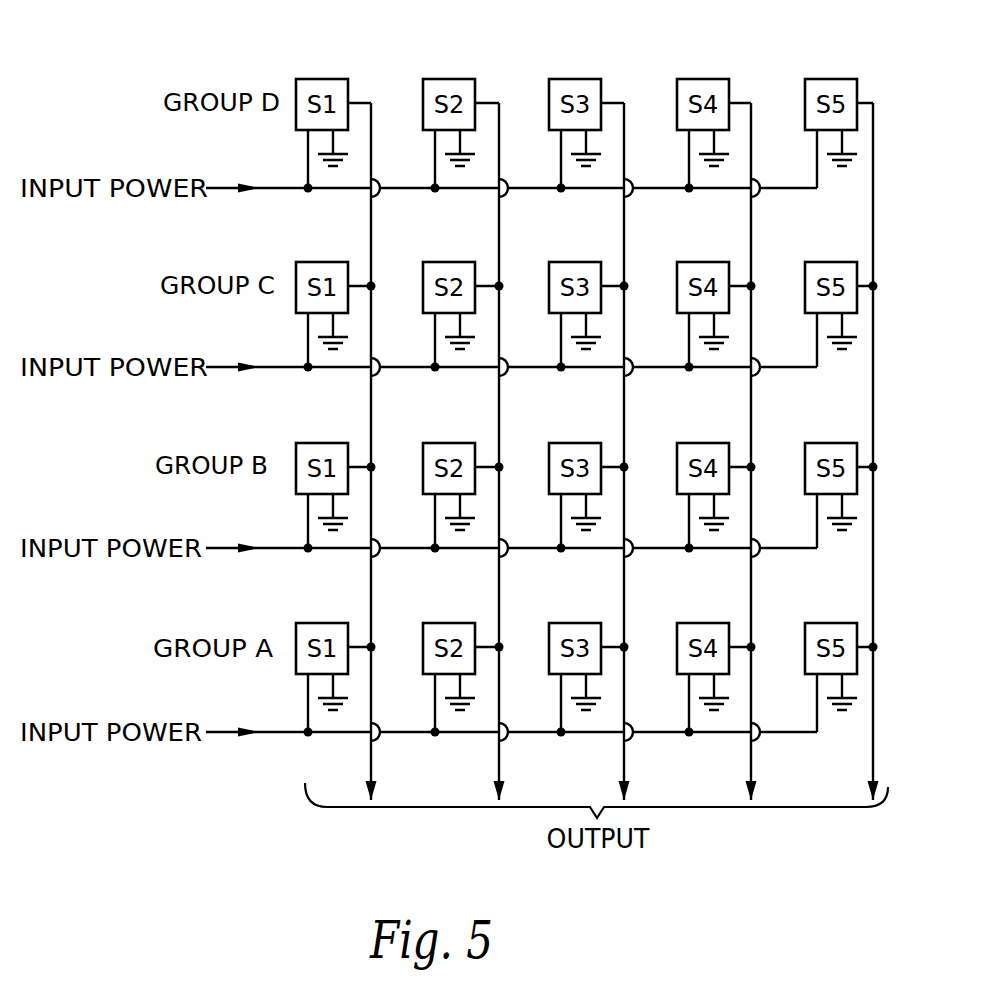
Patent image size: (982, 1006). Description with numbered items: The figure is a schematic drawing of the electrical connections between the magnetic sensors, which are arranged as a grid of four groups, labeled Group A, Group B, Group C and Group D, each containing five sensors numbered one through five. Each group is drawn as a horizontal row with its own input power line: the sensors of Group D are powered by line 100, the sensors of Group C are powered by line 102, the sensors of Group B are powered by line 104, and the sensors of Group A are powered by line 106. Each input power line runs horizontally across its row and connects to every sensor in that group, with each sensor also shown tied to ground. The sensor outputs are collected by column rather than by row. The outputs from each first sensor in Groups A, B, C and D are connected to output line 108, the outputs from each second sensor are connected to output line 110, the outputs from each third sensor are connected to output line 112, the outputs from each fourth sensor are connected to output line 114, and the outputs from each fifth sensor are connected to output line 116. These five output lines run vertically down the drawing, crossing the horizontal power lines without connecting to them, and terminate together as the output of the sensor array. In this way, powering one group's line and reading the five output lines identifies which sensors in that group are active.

The line 100 is at (270, 189).
The line 102 is at (267, 368).
The line 104 is at (267, 549).
The line 106 is at (265, 733).
The output line 108 is at (372, 767).
The output line 110 is at (500, 767).
The output line 112 is at (625, 767).
The output line 114 is at (752, 767).
The output line 116 is at (872, 767).